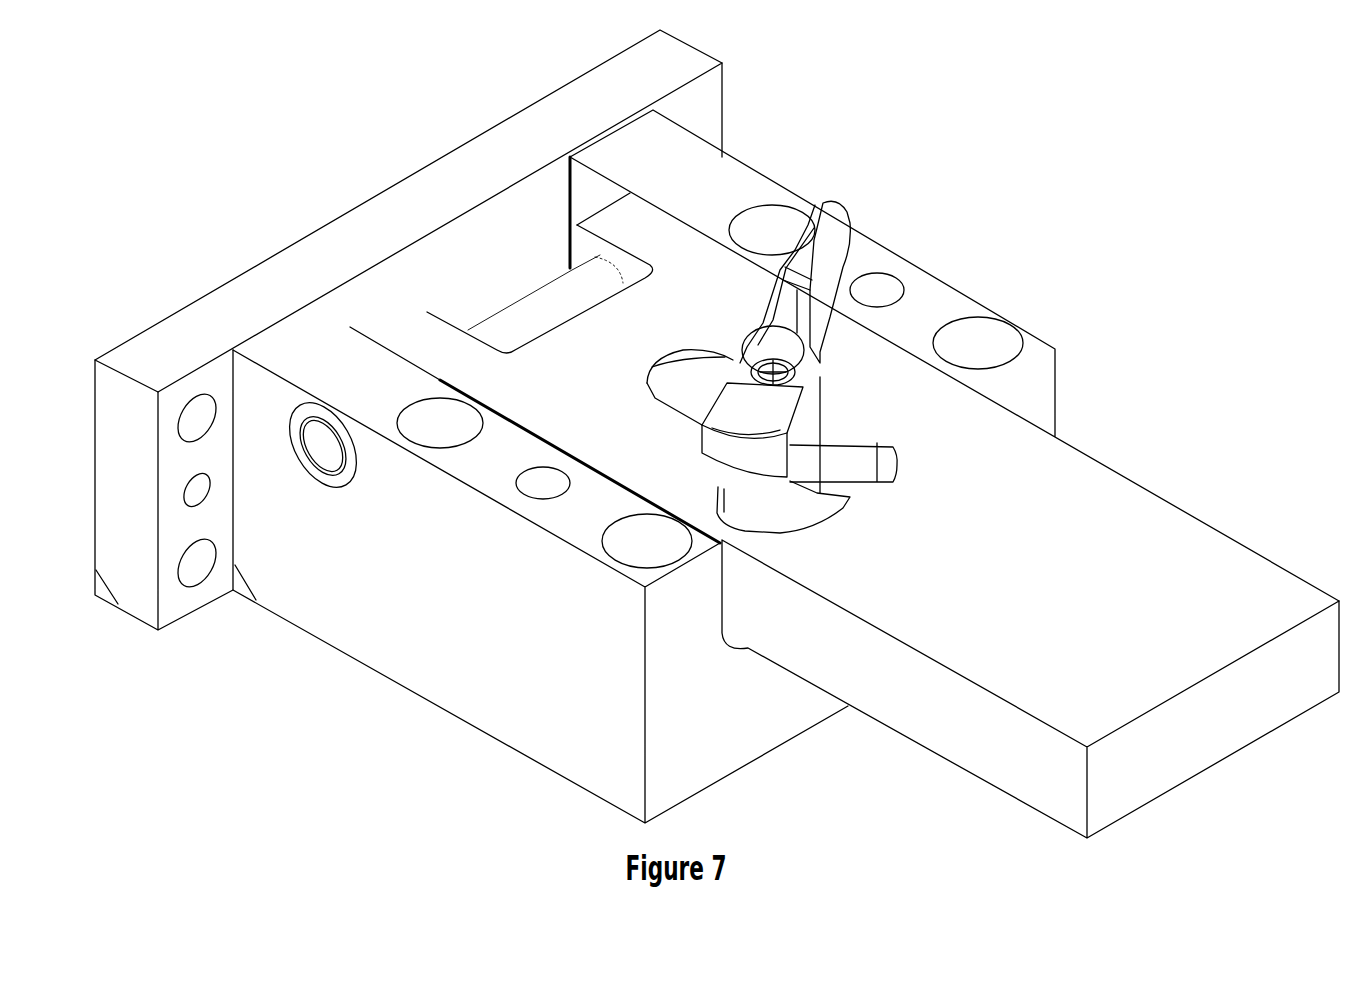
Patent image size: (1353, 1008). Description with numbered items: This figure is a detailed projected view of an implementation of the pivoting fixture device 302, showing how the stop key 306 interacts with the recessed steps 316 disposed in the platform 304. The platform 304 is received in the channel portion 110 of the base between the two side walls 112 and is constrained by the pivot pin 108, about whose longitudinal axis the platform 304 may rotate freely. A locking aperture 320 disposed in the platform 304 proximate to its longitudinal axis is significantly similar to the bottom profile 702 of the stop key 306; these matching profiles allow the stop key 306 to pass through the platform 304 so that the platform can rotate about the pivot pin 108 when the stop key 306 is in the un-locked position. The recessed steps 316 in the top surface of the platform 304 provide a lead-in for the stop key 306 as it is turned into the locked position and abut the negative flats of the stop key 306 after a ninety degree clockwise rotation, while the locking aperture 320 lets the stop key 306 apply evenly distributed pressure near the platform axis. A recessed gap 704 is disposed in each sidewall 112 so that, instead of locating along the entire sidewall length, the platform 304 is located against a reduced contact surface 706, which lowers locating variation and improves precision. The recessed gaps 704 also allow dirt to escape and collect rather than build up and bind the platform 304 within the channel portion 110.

The pivot pin 108 is at (532, 315).
The channel portion 110 is at (520, 243).
The side walls 112 is at (287, 348).
The pivoting fixture device 302 is at (800, 113).
The platform 304 is at (1158, 533).
The stop key 306 is at (800, 430).
The recessed steps 316 is at (685, 390).
The locking aperture 320 is at (852, 474).
The bottom profile 702 is at (822, 456).
The recessed gap 704 is at (462, 387).
The reduced contact surface 706 is at (660, 513).